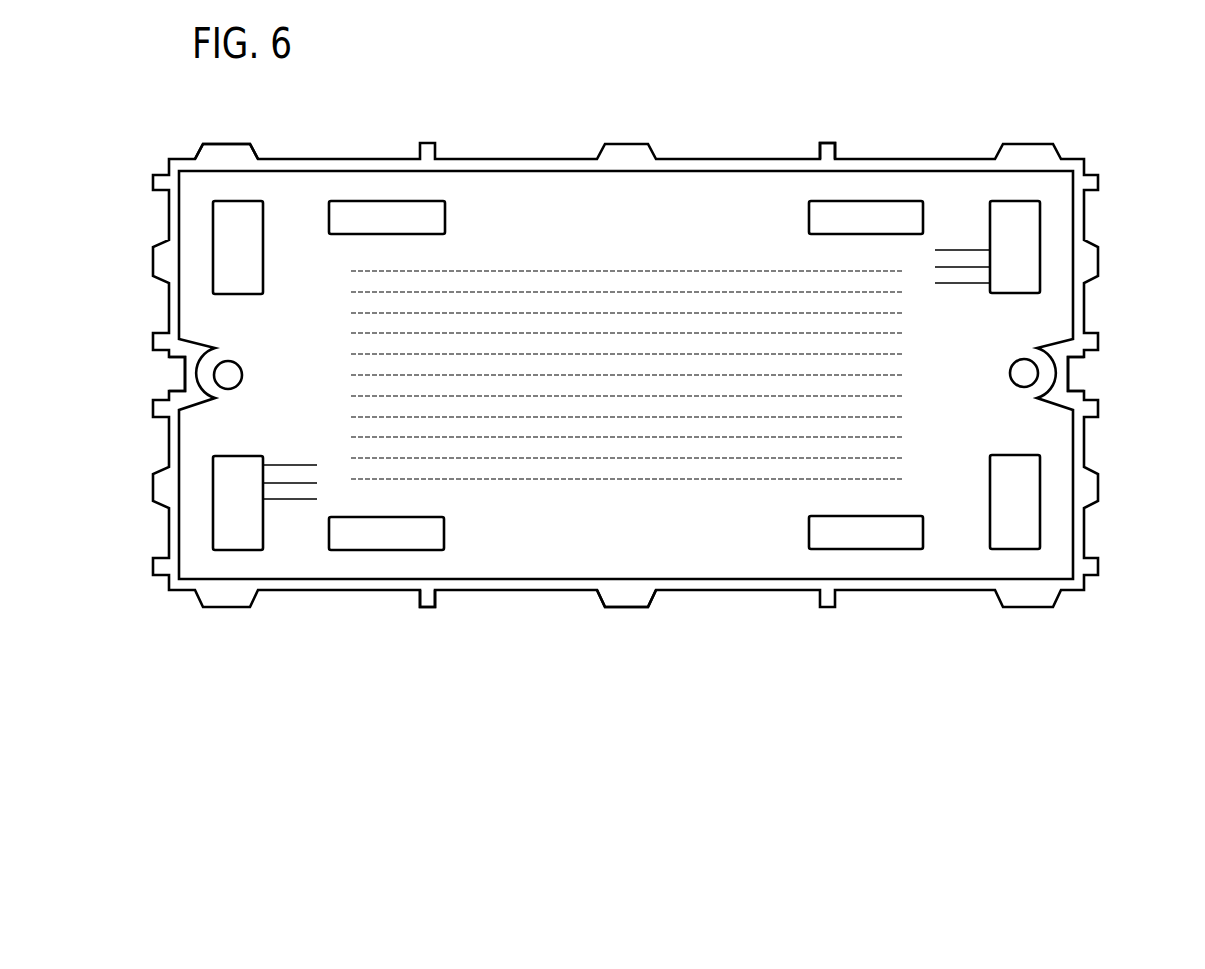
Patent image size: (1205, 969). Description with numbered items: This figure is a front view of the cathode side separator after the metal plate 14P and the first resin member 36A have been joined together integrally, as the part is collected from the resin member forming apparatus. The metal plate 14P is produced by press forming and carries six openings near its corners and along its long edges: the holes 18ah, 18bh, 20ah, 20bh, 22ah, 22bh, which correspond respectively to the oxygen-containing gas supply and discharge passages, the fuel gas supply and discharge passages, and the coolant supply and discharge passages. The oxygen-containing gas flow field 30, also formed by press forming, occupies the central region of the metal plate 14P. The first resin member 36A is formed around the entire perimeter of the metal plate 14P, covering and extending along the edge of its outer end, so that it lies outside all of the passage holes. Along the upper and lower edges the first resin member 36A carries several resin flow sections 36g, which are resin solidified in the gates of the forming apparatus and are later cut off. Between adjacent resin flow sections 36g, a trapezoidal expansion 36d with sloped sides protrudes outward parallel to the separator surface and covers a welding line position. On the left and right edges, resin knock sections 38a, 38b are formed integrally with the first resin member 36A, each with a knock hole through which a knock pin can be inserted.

The metal plate 14P is at (513, 191).
The first resin member 36A is at (1025, 139).
The expansion 36d is at (228, 152).
The resin flow section 36g is at (827, 143).
The resin knock section 38a is at (1060, 375).
The resin knock section 38b is at (190, 368).
The hole 18ah is at (1030, 225).
The hole 18bh is at (222, 523).
The hole 20ah is at (225, 227).
The hole 20bh is at (1030, 523).
The hole 22ah is at (885, 212).
The hole 22bh is at (370, 212).
The oxygen-containing gas flow field 30 is at (712, 452).